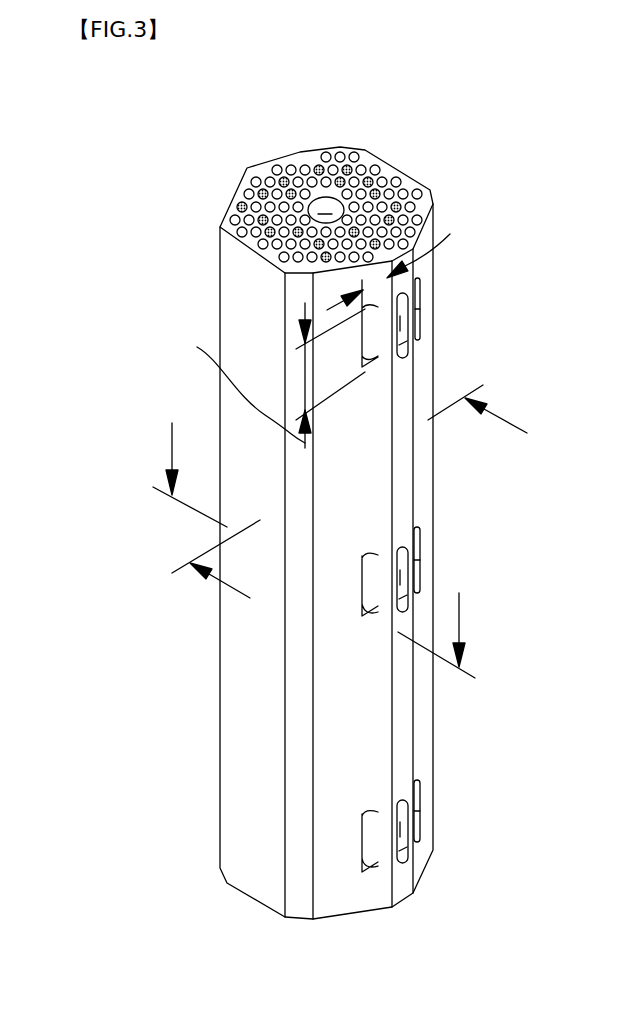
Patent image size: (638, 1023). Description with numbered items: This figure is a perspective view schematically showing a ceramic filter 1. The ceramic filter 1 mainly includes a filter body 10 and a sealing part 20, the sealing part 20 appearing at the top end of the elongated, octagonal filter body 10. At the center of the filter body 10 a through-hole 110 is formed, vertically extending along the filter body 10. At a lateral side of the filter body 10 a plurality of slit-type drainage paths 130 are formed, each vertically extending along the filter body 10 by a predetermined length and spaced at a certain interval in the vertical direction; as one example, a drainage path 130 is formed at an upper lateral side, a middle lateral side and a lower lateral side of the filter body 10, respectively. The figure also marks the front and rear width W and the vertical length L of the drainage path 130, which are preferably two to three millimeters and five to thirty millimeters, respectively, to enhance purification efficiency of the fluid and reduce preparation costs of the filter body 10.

The ceramic filter 1 is at (343, 123).
The filter body 10 is at (398, 490).
The sealing part 20 is at (260, 167).
The through-hole 110 is at (330, 206).
The drainage path 130 is at (403, 323).